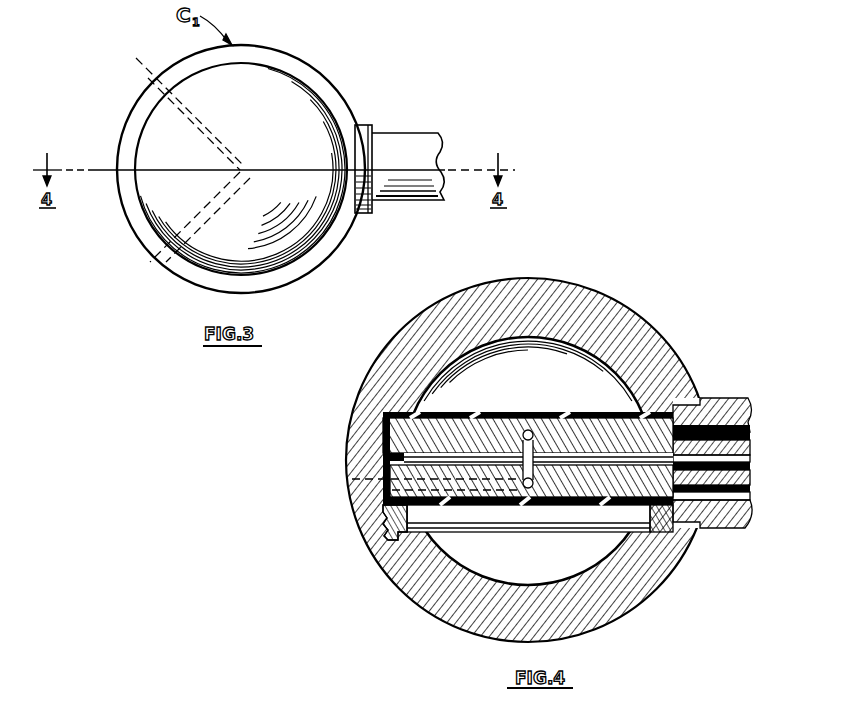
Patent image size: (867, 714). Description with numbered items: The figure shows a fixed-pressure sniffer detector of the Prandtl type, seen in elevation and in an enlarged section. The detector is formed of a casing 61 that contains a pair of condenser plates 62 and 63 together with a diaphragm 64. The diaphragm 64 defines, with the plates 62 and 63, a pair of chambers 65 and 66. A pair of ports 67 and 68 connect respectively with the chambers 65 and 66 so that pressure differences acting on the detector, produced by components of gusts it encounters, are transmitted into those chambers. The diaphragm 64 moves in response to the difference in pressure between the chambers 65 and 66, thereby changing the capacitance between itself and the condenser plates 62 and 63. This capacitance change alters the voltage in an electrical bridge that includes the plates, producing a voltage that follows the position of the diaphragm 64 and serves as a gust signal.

In FIG. 3, the casing 61 is at (333, 247).
In FIG. 4, the casing 61 is at (633, 313).
In FIG. 4, the condenser plate 62 is at (472, 425).
In FIG. 4, the condenser plate 63 is at (488, 493).
In FIG. 4, the diaphragm 64 is at (452, 466).
In FIG. 4, the chamber 65 is at (500, 462).
In FIG. 4, the chamber 66 is at (585, 464).
In FIG. 3, the port 67 is at (150, 72).
In FIG. 4, the port 67 is at (535, 430).
In FIG. 3, the port 68 is at (152, 258).
In FIG. 4, the port 68 is at (352, 482).